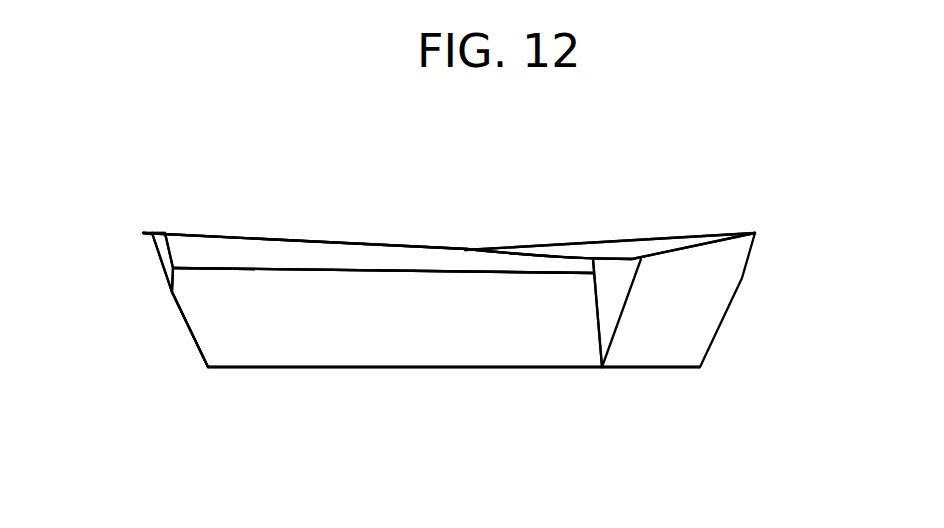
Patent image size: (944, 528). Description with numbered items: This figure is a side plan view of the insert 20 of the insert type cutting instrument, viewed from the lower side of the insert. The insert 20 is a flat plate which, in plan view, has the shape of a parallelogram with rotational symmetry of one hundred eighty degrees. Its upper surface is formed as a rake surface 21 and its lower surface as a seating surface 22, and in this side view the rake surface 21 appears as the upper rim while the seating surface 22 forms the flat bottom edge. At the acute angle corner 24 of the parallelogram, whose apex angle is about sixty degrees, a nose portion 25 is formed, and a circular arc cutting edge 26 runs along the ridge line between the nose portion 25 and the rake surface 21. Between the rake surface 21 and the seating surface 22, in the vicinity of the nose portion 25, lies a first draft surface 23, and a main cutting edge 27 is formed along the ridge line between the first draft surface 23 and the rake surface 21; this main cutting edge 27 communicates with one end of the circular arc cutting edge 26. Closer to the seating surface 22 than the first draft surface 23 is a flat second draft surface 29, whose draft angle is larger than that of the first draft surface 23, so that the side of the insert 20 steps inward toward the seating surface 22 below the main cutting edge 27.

The insert 20 is at (778, 93).
The rake surface 21 is at (573, 229).
The seating surface 22 is at (523, 368).
The first draft surface 23 is at (281, 257).
The acute angle corner 24 is at (120, 283).
The nose portion 25 is at (144, 227).
The circular arc cutting edge 26 is at (143, 233).
The main cutting edge 27 is at (308, 237).
The second draft surface 29 is at (370, 352).